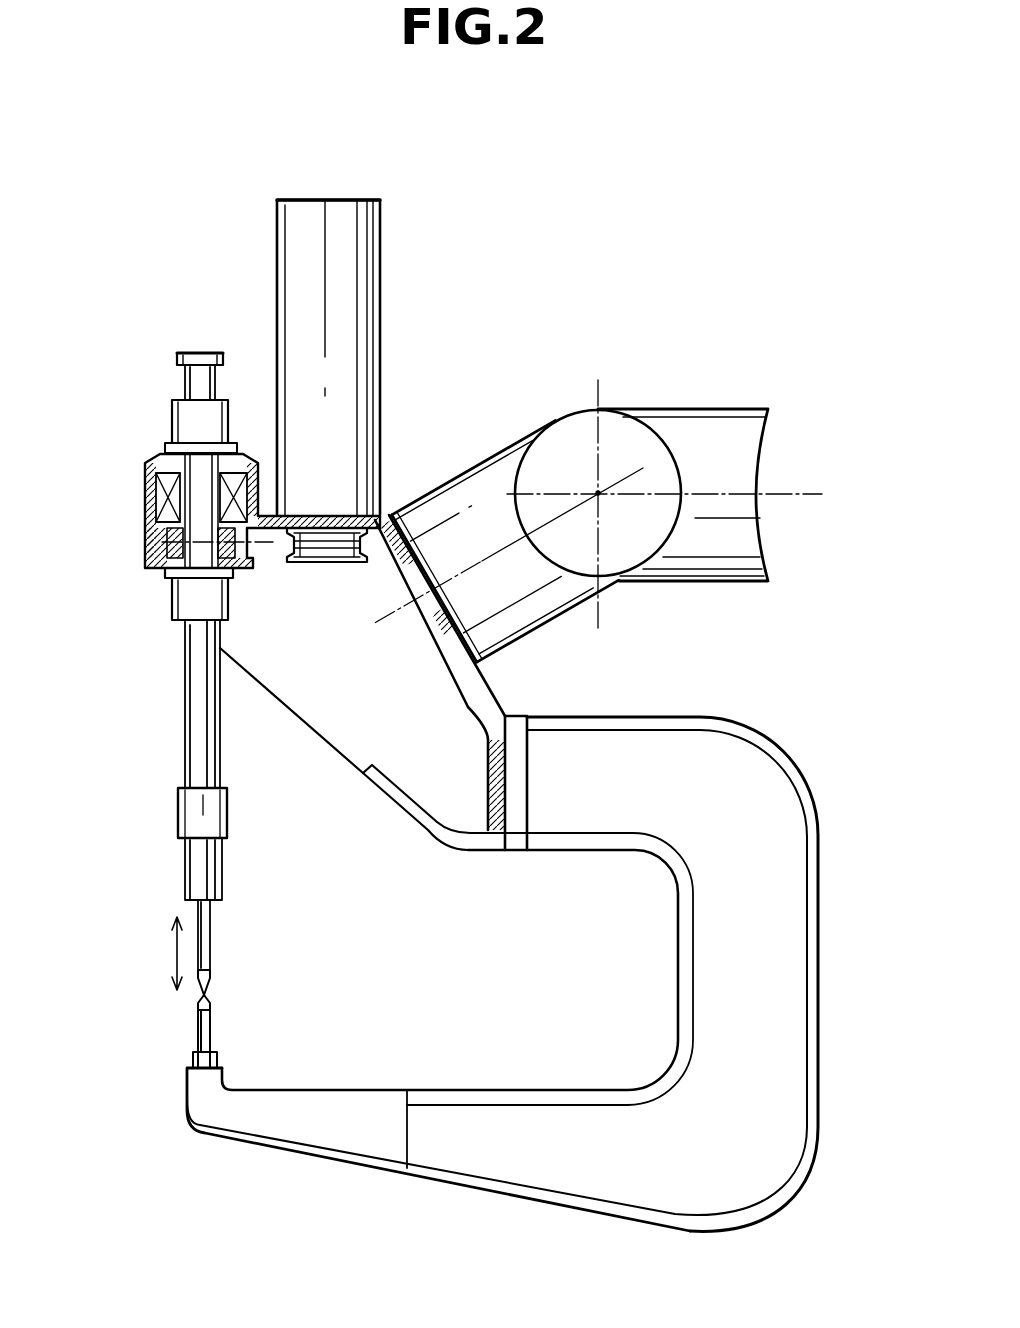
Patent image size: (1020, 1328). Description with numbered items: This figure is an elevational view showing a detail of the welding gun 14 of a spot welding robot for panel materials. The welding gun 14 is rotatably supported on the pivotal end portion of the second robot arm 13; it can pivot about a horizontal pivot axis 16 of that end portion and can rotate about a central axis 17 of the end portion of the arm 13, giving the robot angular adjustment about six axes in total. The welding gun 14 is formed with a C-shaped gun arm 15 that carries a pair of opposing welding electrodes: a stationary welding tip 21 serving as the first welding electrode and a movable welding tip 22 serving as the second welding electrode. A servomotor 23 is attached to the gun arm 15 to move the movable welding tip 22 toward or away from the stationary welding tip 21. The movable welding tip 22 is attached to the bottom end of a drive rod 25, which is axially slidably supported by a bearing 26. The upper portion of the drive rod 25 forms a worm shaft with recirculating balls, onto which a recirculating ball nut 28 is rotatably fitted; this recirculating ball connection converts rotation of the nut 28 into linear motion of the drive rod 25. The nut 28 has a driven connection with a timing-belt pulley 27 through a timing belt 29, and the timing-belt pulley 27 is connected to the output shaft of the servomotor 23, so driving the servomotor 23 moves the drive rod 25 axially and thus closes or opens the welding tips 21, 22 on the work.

The second robot arm 13 is at (706, 416).
The welding gun 14 is at (768, 698).
The C-shaped gun arm 15 is at (790, 871).
The horizontal pivot axis 16 is at (598, 492).
The central axis 17 is at (500, 613).
The stationary welding tip 21 is at (212, 1007).
The movable welding tip 22 is at (212, 980).
The servomotor 23 is at (380, 293).
The drive rod 25 is at (185, 715).
The bearing 26 is at (145, 492).
The timing-belt pulley 27 is at (322, 563).
The recirculating ball nut 28 is at (145, 548).
The timing belt 29 is at (273, 546).